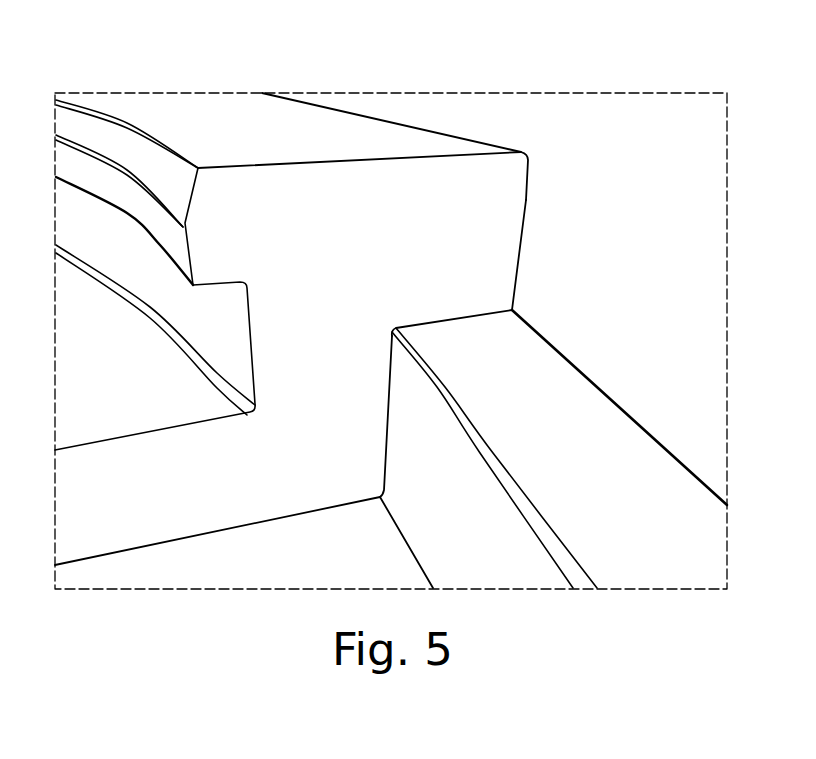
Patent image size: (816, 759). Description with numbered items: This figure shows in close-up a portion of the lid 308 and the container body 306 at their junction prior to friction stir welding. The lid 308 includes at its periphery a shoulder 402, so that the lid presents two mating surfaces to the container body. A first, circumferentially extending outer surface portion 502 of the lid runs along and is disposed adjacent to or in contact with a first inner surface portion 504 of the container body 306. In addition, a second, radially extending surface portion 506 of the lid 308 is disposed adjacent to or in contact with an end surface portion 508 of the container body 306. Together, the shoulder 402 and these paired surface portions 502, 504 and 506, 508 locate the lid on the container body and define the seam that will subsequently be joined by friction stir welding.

The lid 308 is at (362, 127).
The shoulder 402 is at (495, 202).
The second surface portion 506 is at (437, 318).
The first outer surface portion 502 is at (388, 407).
The first inner surface portion 504 is at (502, 533).
The end surface portion 508 is at (584, 443).
The container body 306 is at (582, 397).